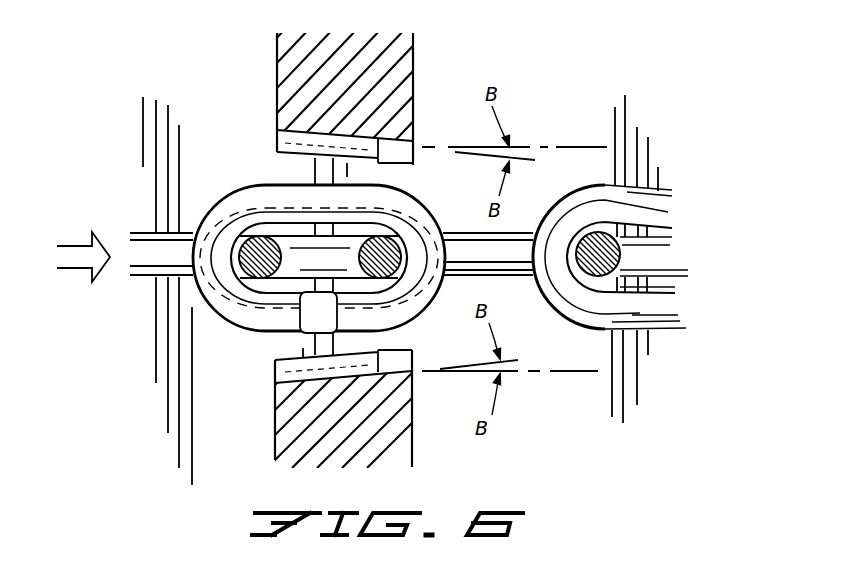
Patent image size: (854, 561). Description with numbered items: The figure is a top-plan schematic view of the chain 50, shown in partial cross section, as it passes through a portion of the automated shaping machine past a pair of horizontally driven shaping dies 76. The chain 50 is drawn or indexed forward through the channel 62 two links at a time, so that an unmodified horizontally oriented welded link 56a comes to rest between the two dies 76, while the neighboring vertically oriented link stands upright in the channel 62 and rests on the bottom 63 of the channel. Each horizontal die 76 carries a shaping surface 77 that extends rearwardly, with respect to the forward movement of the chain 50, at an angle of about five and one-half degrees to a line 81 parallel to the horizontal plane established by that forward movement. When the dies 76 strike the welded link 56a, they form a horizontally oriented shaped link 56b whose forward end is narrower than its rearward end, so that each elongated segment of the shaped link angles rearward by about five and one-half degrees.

The chain 50 is at (148, 260).
The horizontally oriented welded link 56a is at (207, 215).
The horizontally oriented shaped link 56b is at (584, 330).
The channel 62 is at (322, 258).
The bottom of the channel 63 is at (290, 242).
The horizontally oriented shaping dies 76 is at (277, 55).
The shaping surface 77 is at (386, 160).
The line 81 is at (578, 147).